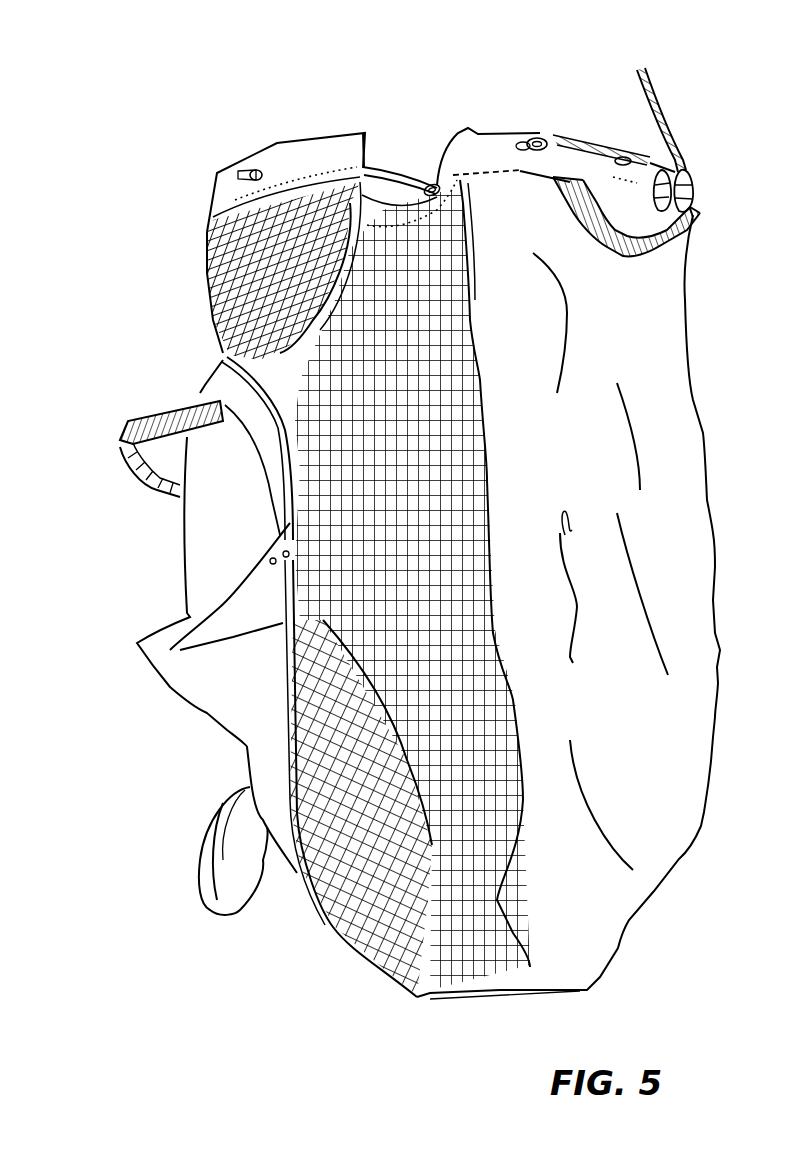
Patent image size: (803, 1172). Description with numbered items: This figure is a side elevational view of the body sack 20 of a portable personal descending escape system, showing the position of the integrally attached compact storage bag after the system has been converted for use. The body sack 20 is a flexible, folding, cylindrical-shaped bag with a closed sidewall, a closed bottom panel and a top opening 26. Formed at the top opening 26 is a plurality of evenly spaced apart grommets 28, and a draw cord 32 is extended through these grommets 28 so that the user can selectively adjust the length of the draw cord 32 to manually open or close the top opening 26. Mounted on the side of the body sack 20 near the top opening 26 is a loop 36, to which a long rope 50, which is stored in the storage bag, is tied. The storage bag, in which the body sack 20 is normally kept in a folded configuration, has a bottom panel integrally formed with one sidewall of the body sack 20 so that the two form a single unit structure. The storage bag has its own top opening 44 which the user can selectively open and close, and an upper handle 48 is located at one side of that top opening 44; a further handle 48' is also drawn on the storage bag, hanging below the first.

The body sack 20 is at (200, 288).
The top opening 26 is at (378, 157).
The grommets 28 is at (256, 168).
The draw cord 32 is at (392, 163).
The loop 36 is at (647, 255).
The top opening 44 is at (193, 540).
The upper handle 48 is at (131, 471).
The lower strap 48' is at (190, 851).
The long rope 50 is at (682, 100).